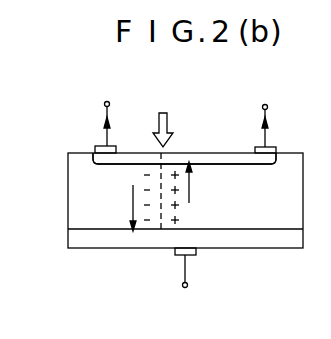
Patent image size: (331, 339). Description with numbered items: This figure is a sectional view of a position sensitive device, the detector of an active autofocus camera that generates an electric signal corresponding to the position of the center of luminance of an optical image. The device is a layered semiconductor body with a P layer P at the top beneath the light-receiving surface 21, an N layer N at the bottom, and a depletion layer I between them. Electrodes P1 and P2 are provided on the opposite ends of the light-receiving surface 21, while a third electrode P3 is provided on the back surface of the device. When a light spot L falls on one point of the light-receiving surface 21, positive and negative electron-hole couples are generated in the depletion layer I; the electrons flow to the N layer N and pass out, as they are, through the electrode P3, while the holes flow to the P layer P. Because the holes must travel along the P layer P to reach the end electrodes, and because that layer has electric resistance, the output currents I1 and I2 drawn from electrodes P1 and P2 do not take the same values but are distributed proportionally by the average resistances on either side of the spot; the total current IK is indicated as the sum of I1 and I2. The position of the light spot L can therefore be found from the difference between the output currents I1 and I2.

The light-receiving surface 21 is at (208, 144).
The P layer P is at (96, 158).
The N layer N is at (83, 233).
The electrode P1 is at (90, 142).
The electrode P2 is at (286, 144).
The electrode P3 is at (206, 259).
The output current I1 is at (115, 124).
The output current I2 is at (255, 126).
The depletion layer I is at (128, 208).
The total current IK is at (226, 185).
The light spot L is at (163, 116).